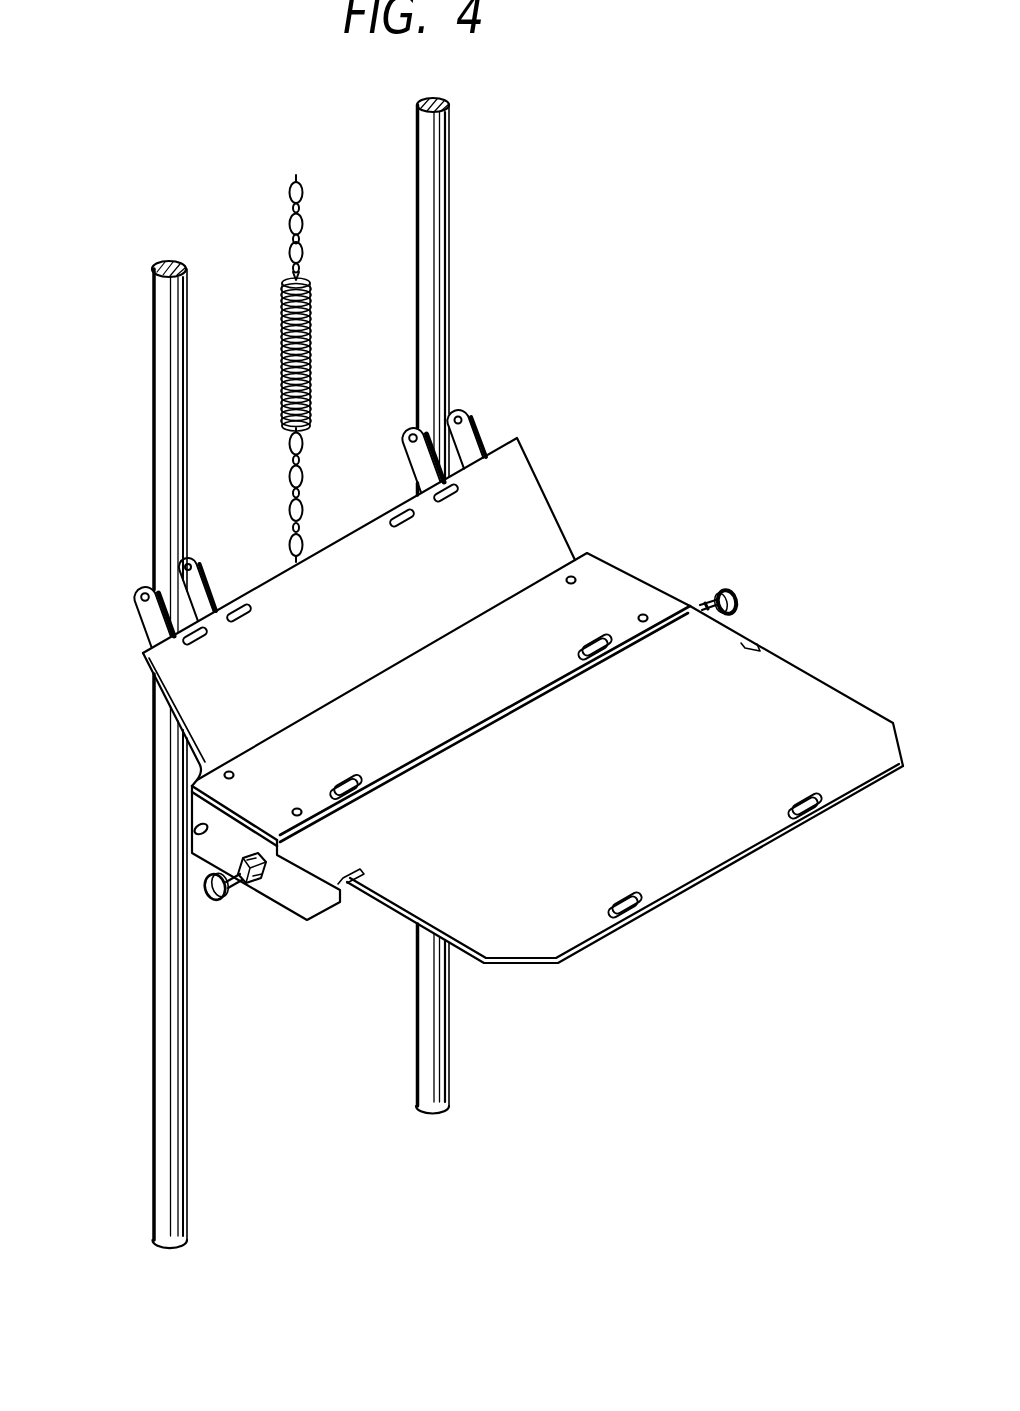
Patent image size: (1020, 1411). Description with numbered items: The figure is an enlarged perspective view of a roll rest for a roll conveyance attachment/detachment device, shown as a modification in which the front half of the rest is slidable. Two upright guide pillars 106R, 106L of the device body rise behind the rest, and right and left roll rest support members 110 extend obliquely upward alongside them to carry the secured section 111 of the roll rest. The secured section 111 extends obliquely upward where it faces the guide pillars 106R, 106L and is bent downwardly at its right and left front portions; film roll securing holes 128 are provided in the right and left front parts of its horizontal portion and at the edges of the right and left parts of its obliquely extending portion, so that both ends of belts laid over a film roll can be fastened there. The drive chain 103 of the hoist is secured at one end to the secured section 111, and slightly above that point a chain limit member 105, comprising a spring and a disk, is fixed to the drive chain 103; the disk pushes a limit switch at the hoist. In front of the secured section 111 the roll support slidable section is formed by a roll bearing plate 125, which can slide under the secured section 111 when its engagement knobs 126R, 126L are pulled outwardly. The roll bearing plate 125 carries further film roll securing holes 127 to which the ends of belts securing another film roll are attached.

The drive chain 103 is at (304, 226).
The chain limit member 105 is at (311, 358).
The guide pillar 106L is at (453, 295).
The guide pillar 106R is at (154, 350).
The roll rest support member 110 is at (464, 426).
The secured section 111 is at (549, 491).
The roll bearing plate 125 is at (791, 667).
The engagement knob 126L is at (733, 590).
The engagement knob 126R is at (222, 902).
The film roll securing hole 127 is at (452, 500).
The film roll securing hole 128 is at (399, 525).